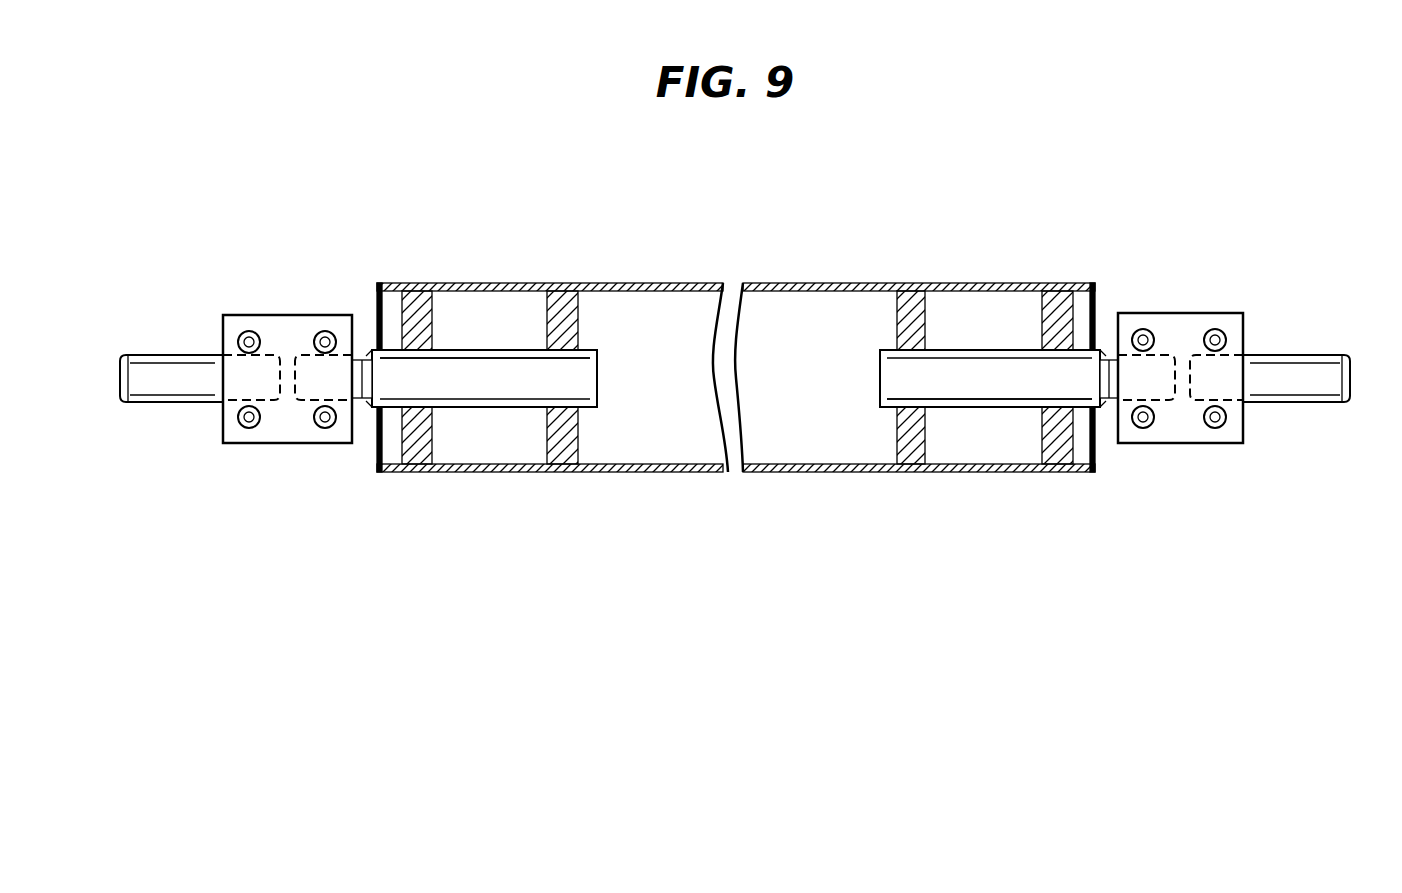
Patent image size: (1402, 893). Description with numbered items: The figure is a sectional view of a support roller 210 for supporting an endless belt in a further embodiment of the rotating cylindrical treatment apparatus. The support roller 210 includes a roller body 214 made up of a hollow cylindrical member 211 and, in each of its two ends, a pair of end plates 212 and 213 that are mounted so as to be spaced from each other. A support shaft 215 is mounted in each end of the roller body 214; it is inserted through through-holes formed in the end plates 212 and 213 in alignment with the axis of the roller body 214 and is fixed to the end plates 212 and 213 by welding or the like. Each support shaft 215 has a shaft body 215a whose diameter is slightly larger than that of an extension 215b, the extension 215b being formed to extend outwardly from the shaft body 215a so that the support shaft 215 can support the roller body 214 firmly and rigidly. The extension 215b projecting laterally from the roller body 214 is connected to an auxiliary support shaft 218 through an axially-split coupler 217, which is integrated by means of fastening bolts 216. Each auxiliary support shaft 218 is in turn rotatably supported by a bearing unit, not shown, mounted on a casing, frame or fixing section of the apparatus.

The support roller 210 is at (736, 358).
The hollow cylindrical member 211 is at (688, 283).
The end plate 212 is at (433, 317).
The end plate 213 is at (573, 322).
The roller body 214 is at (641, 474).
The support shaft 215 is at (759, 390).
The shaft body 215a is at (522, 395).
The extension 215b is at (357, 410).
The fastening bolt 216 is at (249, 331).
The axially-split coupler 217 is at (713, 365).
The auxiliary support shaft 218 is at (163, 368).